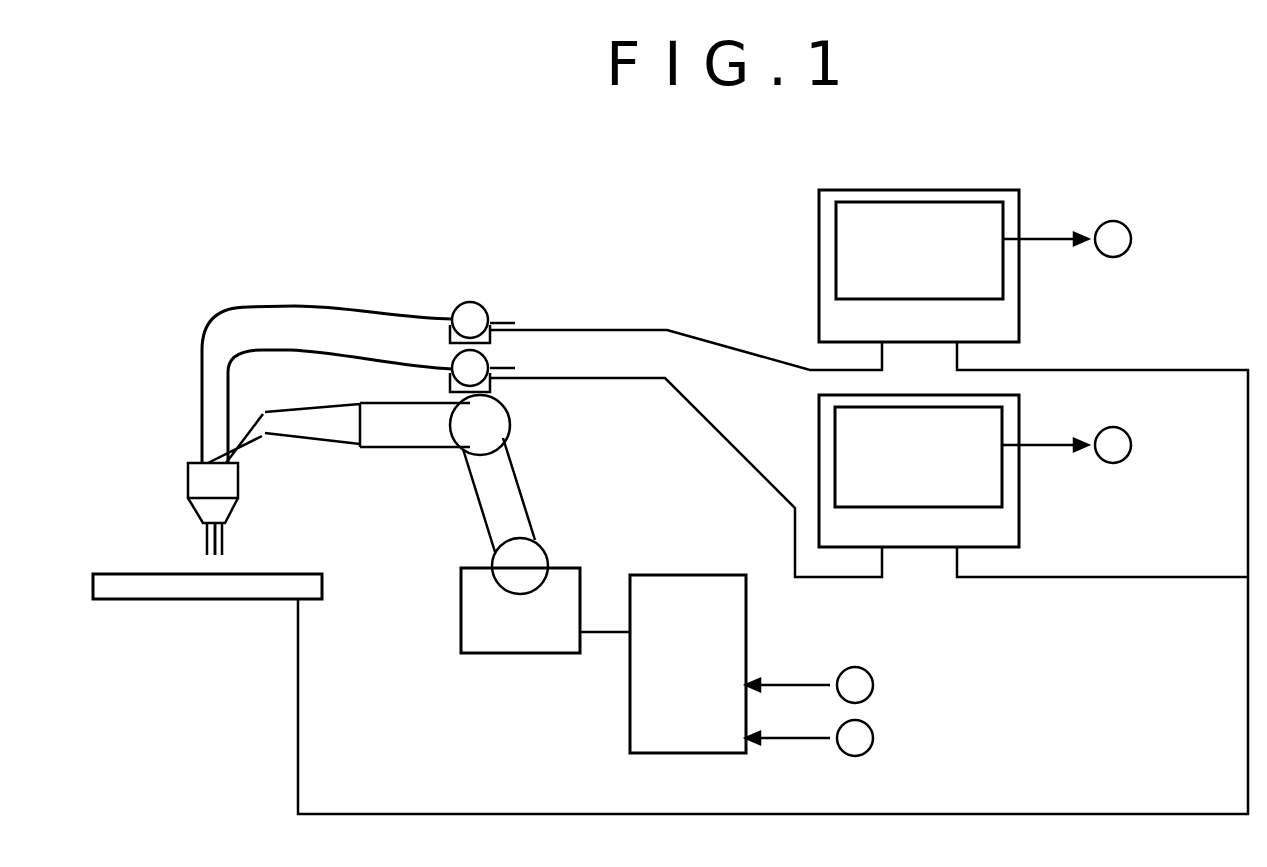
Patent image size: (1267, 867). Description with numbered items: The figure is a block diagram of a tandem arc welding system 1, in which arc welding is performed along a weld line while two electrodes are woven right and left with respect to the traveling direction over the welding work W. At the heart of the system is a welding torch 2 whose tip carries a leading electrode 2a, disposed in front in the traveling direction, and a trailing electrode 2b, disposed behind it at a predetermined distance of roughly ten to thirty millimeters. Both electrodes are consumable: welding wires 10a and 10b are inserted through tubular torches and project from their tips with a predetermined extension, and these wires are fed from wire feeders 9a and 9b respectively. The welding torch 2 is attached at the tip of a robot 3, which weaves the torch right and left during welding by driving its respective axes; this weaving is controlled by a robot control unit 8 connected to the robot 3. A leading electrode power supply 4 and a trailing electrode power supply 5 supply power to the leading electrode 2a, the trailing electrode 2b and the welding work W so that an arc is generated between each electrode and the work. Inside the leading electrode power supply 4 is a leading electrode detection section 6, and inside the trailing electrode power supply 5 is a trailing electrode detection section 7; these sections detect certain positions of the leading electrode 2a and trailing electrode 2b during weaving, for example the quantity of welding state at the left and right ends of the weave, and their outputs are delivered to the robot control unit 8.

The tandem arc welding system 1 is at (280, 252).
The welding torch 2 is at (188, 482).
The leading electrode 2a is at (207, 545).
The trailing electrode 2b is at (224, 545).
The robot 3 is at (517, 655).
The leading electrode power supply 4 is at (923, 266).
The trailing electrode power supply 5 is at (923, 471).
The leading electrode detection section 6 is at (836, 236).
The trailing electrode detection section 7 is at (835, 432).
The robot control unit 8 is at (747, 625).
The wire feeder 9a is at (491, 313).
The wire feeder 9b is at (491, 360).
The welding wire 10a is at (222, 316).
The welding wire 10b is at (250, 352).
The welding work W is at (140, 600).